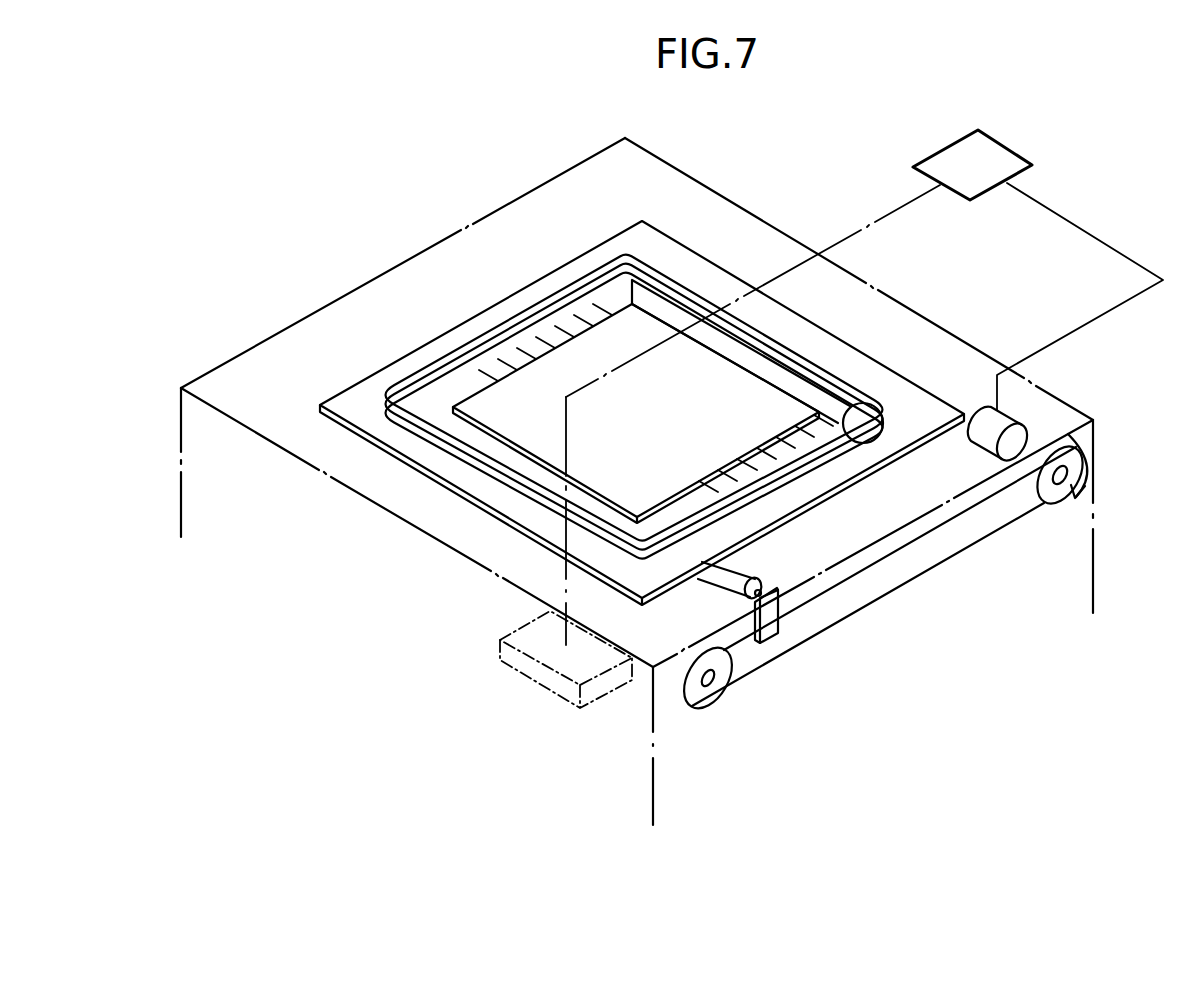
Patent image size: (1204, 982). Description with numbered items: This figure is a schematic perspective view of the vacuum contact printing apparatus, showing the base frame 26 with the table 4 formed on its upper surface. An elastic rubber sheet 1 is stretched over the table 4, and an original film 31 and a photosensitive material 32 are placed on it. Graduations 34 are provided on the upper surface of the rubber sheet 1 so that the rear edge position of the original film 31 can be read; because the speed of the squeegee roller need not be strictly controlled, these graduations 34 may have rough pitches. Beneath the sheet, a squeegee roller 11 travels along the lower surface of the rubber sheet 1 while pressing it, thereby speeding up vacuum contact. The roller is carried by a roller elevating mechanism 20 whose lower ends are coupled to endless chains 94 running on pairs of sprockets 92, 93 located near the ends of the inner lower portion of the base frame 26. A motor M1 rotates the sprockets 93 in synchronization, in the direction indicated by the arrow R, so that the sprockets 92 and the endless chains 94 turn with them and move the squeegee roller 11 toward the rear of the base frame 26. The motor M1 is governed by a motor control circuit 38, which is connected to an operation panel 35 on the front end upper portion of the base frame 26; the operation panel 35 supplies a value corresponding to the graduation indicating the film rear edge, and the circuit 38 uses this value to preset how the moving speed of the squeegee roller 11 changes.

The table 4 is at (287, 362).
The elastic rubber sheet 1 is at (437, 477).
The original film 31 is at (772, 388).
The photosensitive material 32 is at (757, 351).
The graduations 34 is at (879, 420).
The motor control circuit 38 is at (1003, 144).
The motor M1 is at (982, 457).
The arrow R is at (1087, 475).
The sprockets 93 is at (1064, 500).
The base frame 26 is at (1095, 558).
The endless chains 94 is at (902, 586).
The sprockets 92 is at (706, 706).
The roller elevating mechanism 20 is at (780, 614).
The squeegee roller 11 is at (744, 570).
The operation panel 35 is at (560, 696).